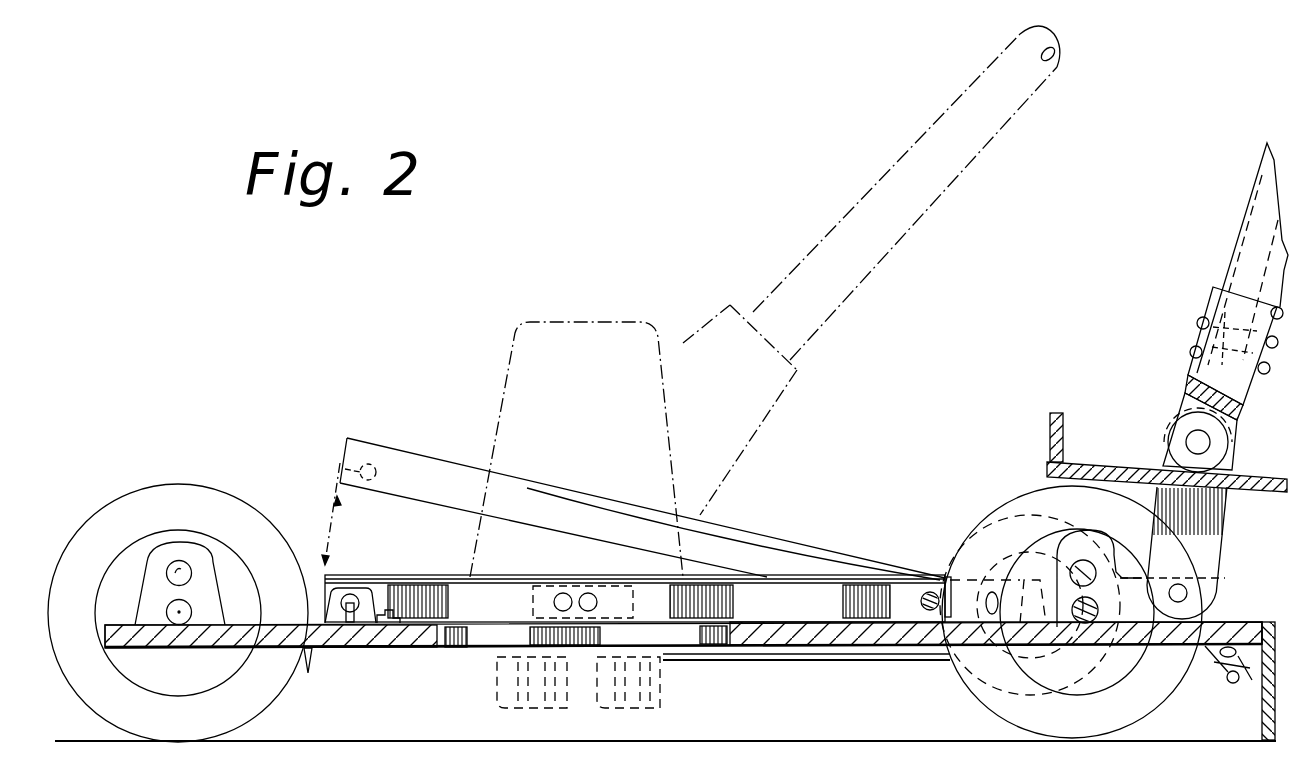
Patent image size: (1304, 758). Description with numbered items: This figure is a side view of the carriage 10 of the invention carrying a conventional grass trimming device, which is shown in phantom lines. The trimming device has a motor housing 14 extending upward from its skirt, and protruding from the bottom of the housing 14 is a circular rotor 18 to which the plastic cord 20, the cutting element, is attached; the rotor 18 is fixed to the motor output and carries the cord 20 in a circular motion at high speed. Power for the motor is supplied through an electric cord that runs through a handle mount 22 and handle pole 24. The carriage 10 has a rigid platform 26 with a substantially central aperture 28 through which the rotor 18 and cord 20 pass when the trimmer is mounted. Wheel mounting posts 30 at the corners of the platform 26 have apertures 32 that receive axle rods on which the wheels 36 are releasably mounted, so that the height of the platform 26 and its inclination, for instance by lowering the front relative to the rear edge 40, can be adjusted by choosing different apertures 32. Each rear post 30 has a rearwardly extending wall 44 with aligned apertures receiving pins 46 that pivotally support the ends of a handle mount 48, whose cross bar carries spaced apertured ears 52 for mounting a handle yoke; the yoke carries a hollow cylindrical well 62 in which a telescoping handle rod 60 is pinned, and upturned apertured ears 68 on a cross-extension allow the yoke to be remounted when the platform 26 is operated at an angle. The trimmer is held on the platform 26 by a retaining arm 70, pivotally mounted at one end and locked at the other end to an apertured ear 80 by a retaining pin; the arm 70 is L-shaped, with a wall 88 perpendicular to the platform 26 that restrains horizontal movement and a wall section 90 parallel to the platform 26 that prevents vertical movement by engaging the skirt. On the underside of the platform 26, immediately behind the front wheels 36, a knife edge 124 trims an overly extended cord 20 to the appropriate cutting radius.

The carriage 10 is at (937, 482).
The motor housing 14 is at (510, 410).
The circular rotor 18 is at (492, 688).
The plastic cord 20 is at (724, 662).
The handle mount 22 is at (774, 414).
The handle pole 24 is at (848, 295).
The rigid platform 26 is at (843, 622).
The aperture 28 is at (458, 645).
The wheel mounting post 30 is at (213, 572).
The aperture 32 is at (172, 568).
The wheel 36 is at (130, 487).
The rear edge 40 is at (1258, 622).
The rearwardly extending wall 44 is at (1122, 577).
The pin 46 is at (1182, 586).
The handle mount 48 is at (1220, 516).
The apertured ear 52 is at (1230, 467).
The telescoping handle rod 60 is at (1243, 215).
The hollow cylindrical well 62 is at (1213, 290).
The upturned apertured ear 68 is at (1063, 413).
The retaining arm 70 is at (740, 577).
The apertured ear 80 is at (372, 628).
The wall 88 is at (350, 468).
The wall section 90 is at (393, 498).
The knife edge 124 is at (307, 660).